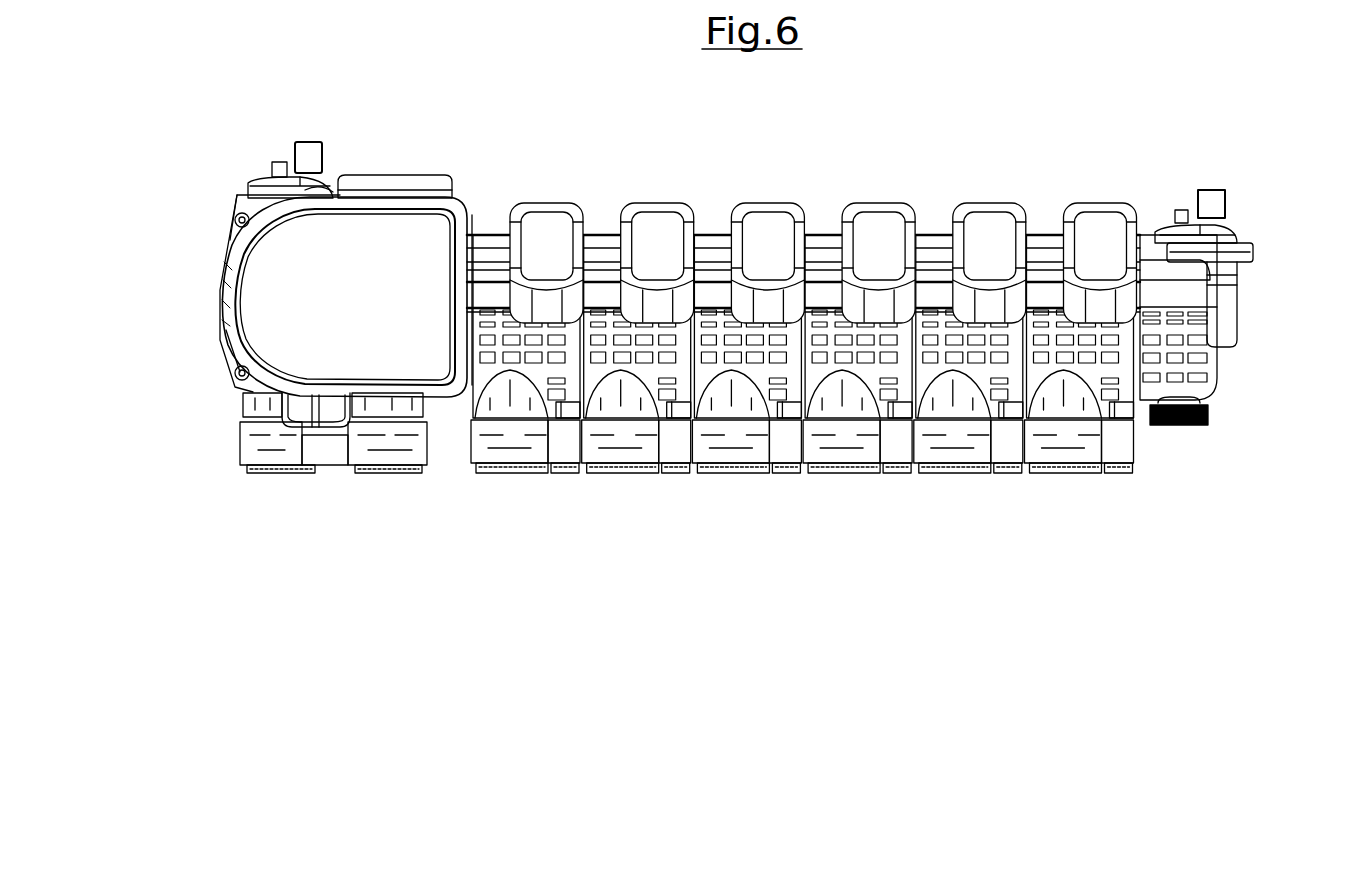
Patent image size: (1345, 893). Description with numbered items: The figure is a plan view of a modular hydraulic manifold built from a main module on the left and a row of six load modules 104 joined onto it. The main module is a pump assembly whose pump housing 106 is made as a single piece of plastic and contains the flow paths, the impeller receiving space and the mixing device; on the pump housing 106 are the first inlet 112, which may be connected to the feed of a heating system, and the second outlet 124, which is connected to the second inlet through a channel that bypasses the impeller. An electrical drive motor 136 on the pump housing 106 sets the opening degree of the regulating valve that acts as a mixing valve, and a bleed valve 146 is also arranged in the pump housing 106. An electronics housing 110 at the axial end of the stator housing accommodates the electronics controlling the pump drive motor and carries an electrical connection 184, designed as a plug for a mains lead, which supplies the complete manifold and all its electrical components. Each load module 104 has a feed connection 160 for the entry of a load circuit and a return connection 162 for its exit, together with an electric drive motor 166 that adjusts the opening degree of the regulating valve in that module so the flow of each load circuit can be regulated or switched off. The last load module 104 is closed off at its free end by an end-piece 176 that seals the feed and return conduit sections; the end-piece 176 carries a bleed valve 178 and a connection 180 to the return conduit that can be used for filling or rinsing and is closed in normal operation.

The load module 104 is at (1153, 600).
The pump housing 106 is at (233, 200).
The electronics housing 110 is at (430, 316).
The first inlet 112 is at (292, 477).
The second outlet 124 is at (372, 477).
The electrical drive motor 136 is at (402, 180).
The bleed valve 146 is at (248, 185).
The feed connection 160 is at (516, 475).
The return connection 162 is at (571, 475).
The electric drive motor 166 is at (548, 223).
The end-piece 176 is at (1213, 388).
The bleed valve 178 is at (1240, 235).
The connection 180 is at (1175, 428).
The electrical connection 184 is at (292, 408).